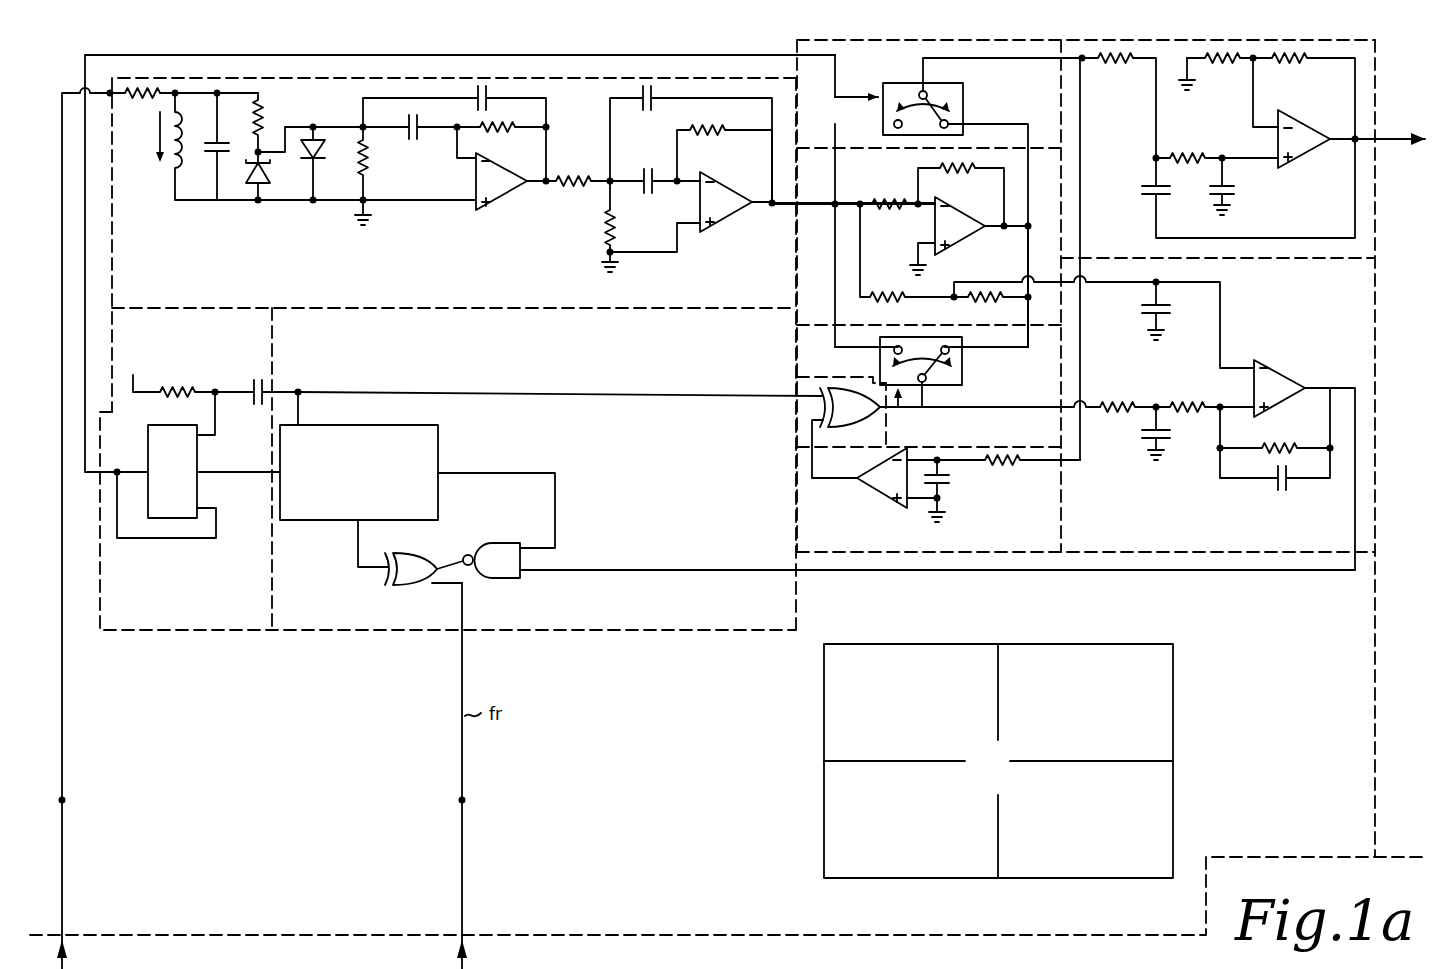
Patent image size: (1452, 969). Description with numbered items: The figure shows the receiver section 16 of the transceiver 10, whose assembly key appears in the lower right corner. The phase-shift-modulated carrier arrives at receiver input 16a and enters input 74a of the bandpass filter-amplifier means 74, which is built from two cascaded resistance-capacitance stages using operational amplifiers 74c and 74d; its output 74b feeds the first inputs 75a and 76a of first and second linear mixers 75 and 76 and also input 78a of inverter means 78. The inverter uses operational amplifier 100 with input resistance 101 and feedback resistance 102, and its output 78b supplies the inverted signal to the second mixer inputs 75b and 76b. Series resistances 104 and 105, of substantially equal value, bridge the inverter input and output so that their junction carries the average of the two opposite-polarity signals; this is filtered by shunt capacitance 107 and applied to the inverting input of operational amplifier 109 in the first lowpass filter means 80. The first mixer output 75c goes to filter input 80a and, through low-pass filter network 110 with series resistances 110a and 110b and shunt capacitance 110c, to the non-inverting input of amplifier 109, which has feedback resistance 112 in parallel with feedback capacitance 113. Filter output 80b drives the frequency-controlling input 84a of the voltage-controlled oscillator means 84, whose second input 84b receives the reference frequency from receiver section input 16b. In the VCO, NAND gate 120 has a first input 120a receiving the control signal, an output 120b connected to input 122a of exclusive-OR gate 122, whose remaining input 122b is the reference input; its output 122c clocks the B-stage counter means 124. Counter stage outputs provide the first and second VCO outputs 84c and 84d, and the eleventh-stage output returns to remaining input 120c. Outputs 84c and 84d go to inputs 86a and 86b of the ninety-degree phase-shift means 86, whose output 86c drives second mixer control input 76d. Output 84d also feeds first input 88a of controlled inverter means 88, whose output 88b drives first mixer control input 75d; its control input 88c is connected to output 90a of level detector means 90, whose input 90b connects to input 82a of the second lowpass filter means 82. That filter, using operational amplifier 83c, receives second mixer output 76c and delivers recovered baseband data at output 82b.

The transceiver 10 is at (997, 774).
The receiver section 16 is at (200, 845).
The receiver input 16a is at (65, 798).
The receiver section input 16b is at (465, 798).
The bandpass filter-amplifier means 74 is at (142, 304).
The bandpass filter-amplifier input 74a is at (110, 96).
The bandpass filter-amplifier output 74b is at (790, 207).
The operational amplifier 74c is at (503, 195).
The operational amplifier 74d is at (715, 230).
The first linear mixer means 75 is at (822, 372).
The first mixer input 75a is at (834, 333).
The first mixer second input 75b is at (1028, 340).
The first mixer output 75c is at (1060, 410).
The first mixer control input 75d is at (890, 397).
The second linear mixer means 76 is at (822, 139).
The second mixer input 76a is at (835, 125).
The second mixer second input 76b is at (1030, 145).
The second mixer output 76c is at (1058, 58).
The second mixer control input 76d is at (793, 55).
The inverter means 78 is at (824, 314).
The inverter means input 78a is at (850, 203).
The inverter output 78b is at (1025, 230).
The first lowpass filter means 80 is at (1100, 549).
The first lowpass filter input 80a is at (1098, 405).
The first lowpass filter output 80b is at (1352, 554).
The second lowpass filter means 82 is at (1112, 252).
The second lowpass filter input 82a is at (1086, 62).
The second lowpass filter output 82b is at (1372, 148).
The operational amplifier 83c is at (1298, 172).
The voltage-controlled oscillator means 84 is at (302, 619).
The frequency-controlling input 84a is at (795, 572).
The VCO second input 84b is at (465, 622).
The first VCO output 84c is at (272, 476).
The second VCO output 84d is at (300, 390).
The 90° phase-shift means 86 is at (130, 619).
The phase-shift means input 86a is at (262, 472).
The phase-shift means input 86b is at (258, 378).
The phase-shift means output 86c is at (110, 472).
The controlled inverter means 88 is at (854, 444).
The controlled inverter first input 88a is at (796, 397).
The controlled inverter output 88b is at (879, 422).
The controlled inverter control input 88c is at (797, 427).
The level detector means 90 is at (827, 549).
The level detector output 90a is at (855, 480).
The level detector input 90b is at (1062, 462).
The operational amplifier 100 is at (962, 222).
The input resistance 101 is at (906, 210).
The feedback resistance 102 is at (960, 172).
The series resistance 104 is at (890, 302).
The series resistance 105 is at (988, 300).
The shunt capacitance 107 is at (1143, 323).
The operational amplifier 109 is at (1283, 370).
The low-pass filter network 110 is at (1168, 480).
The series resistance 110a is at (1135, 424).
The series resistance 110b is at (1193, 405).
The shunt capacitance 110c is at (1151, 453).
The feedback resistance 112 is at (1276, 440).
The feedback capacitance 113 is at (1277, 486).
The NAND gate 120 is at (513, 544).
The NAND gate first input 120a is at (546, 573).
The NAND gate output 120b is at (467, 554).
The NAND gate remaining input 120c is at (558, 507).
The exclusive-OR gate 122 is at (383, 557).
The exclusive-OR gate input 122a is at (443, 551).
The exclusive-OR gate remaining input 122b is at (457, 591).
The exclusive-OR gate output 122c is at (375, 573).
The B-stage counter means 124 is at (433, 425).